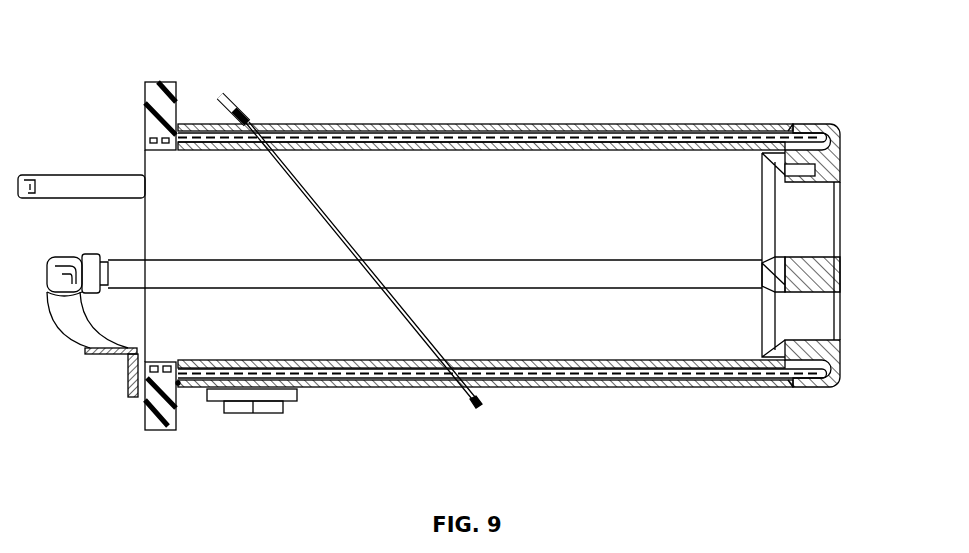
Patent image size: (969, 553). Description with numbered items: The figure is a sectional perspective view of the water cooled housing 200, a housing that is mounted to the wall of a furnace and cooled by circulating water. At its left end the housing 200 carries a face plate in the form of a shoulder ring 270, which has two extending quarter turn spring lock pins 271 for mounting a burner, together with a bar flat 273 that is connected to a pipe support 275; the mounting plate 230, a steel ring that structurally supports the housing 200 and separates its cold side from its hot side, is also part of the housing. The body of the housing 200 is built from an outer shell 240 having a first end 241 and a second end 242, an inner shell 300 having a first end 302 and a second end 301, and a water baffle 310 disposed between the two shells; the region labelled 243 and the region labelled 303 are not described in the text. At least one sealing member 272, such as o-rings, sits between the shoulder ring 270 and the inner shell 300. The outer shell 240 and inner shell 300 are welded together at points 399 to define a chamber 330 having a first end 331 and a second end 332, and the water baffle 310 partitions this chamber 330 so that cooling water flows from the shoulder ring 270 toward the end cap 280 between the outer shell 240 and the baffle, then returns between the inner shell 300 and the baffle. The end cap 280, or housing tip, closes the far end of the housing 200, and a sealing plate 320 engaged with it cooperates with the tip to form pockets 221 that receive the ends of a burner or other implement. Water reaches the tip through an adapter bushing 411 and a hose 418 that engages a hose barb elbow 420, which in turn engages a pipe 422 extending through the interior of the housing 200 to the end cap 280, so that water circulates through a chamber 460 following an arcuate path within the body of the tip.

The water cooled housing 200 is at (555, 247).
The pockets 221 is at (830, 238).
The mounting plate 230 is at (241, 97).
The outer shell 240 is at (602, 124).
The first end 241 is at (786, 120).
The second end 242 is at (181, 125).
The outer layer 243 is at (421, 121).
The shoulder ring 270 is at (160, 82).
The quarter turn spring lock pins 271 is at (85, 175).
The sealing member 272 is at (159, 358).
The bar flat 273 is at (145, 408).
The pipe support 275 is at (124, 358).
The end cap 280 is at (832, 362).
The inner shell 300 is at (500, 151).
The second end 301 is at (183, 154).
The first end 302 is at (781, 148).
The inner layer 303 is at (432, 154).
The water baffle 310 is at (510, 130).
The sealing plate 320 is at (760, 233).
The chamber 330 is at (323, 138).
The first end 331 is at (826, 123).
The second end 332 is at (181, 386).
The weld points 399 is at (801, 128).
The adapter bushing 411 is at (275, 414).
The hose 418 is at (77, 333).
The hose barb elbow 420 is at (70, 270).
The pipe 422 is at (227, 275).
The chamber 460 is at (817, 168).